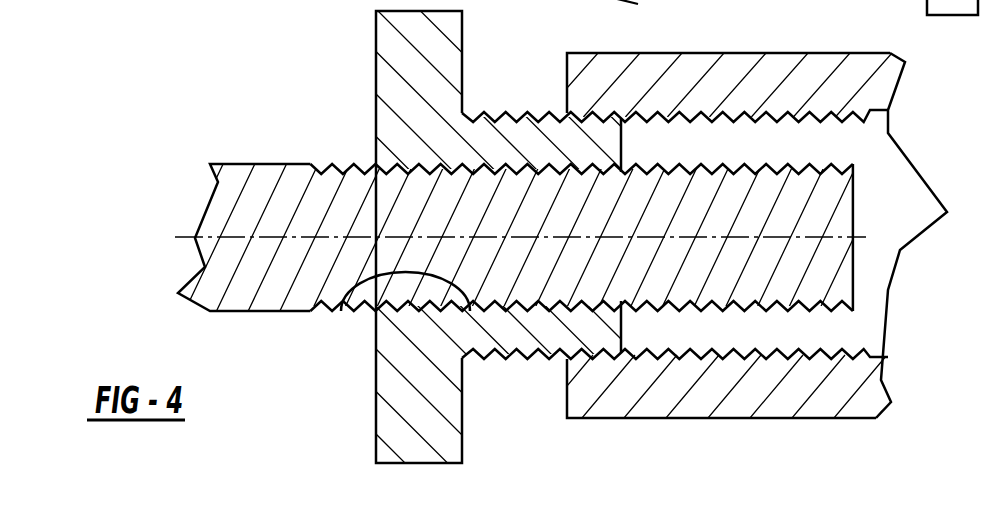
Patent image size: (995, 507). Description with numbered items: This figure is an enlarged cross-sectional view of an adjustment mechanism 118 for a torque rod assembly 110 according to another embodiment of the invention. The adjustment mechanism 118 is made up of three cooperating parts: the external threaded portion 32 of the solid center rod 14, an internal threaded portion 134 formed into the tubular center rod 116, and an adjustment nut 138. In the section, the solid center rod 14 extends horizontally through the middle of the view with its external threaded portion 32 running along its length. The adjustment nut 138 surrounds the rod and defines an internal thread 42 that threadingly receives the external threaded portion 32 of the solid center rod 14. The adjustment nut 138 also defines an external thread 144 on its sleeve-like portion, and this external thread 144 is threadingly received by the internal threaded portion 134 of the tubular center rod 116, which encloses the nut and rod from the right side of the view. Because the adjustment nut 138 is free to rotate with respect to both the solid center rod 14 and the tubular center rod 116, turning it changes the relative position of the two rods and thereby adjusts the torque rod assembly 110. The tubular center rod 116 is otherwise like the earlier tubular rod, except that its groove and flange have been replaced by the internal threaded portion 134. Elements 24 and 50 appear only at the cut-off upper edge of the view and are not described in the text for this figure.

The torque rod assembly 110 is at (248, 133).
The solid center rod 14 is at (242, 287).
The external threaded portion 32 is at (752, 285).
The internal thread 42 is at (341, 312).
The adjustment mechanism 118 is at (313, 72).
The adjustment nut 138 is at (440, 433).
The external thread 144 is at (525, 361).
The tubular center rod 116 is at (827, 402).
The internal threaded portion 134 is at (850, 345).
The housing 24 is at (925, 7).
The rotation direction 50 is at (631, 6).